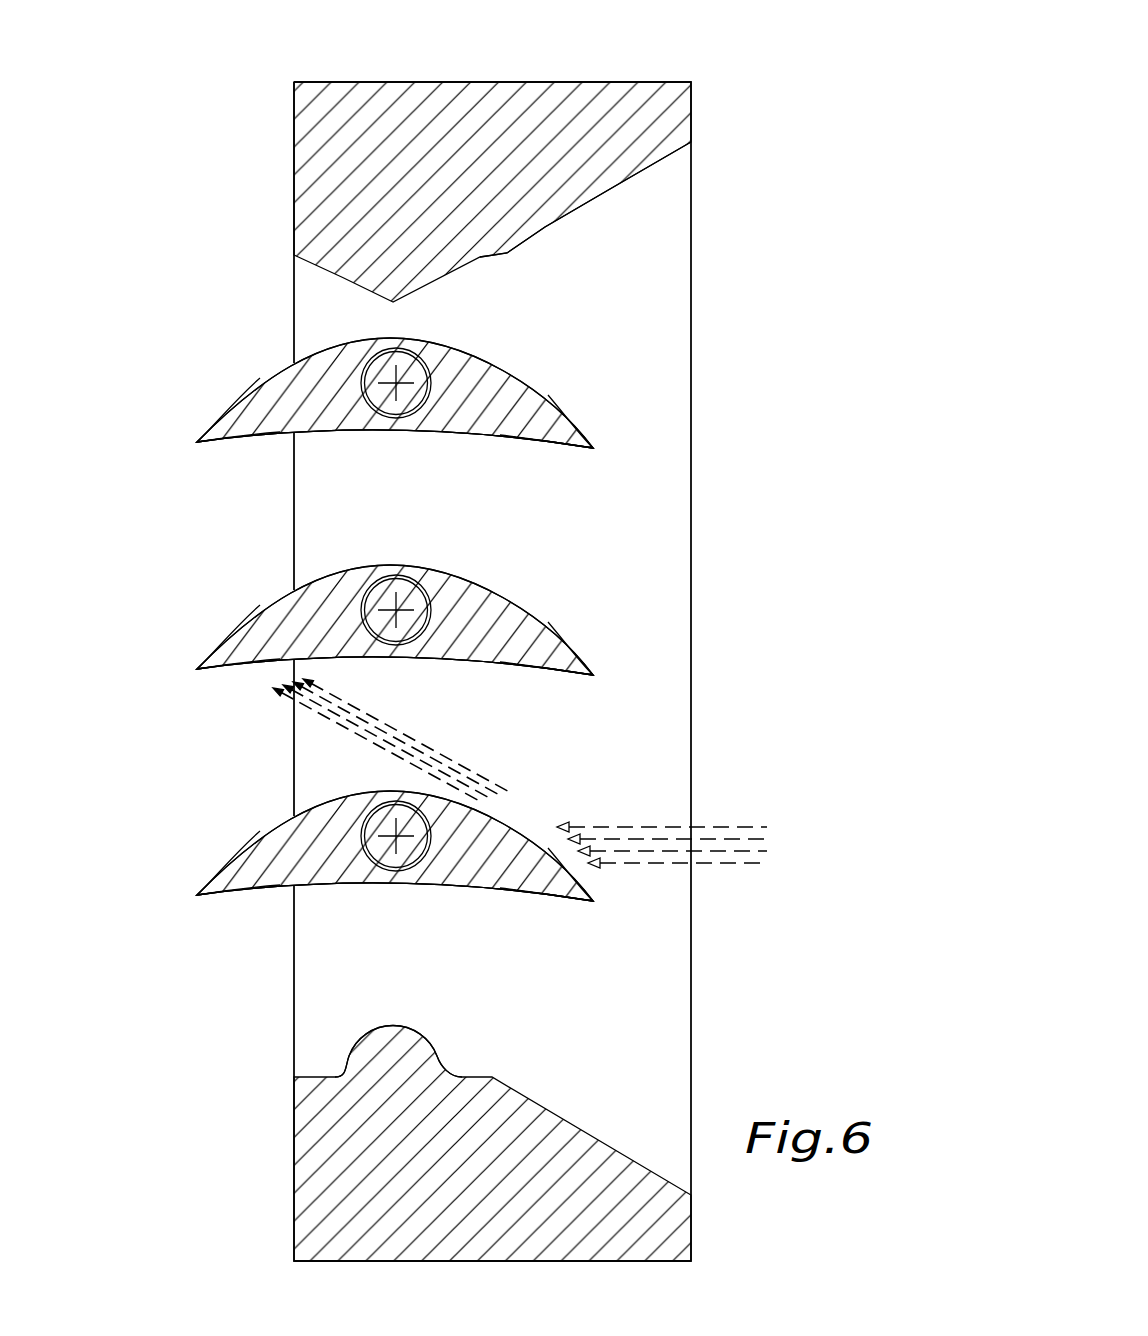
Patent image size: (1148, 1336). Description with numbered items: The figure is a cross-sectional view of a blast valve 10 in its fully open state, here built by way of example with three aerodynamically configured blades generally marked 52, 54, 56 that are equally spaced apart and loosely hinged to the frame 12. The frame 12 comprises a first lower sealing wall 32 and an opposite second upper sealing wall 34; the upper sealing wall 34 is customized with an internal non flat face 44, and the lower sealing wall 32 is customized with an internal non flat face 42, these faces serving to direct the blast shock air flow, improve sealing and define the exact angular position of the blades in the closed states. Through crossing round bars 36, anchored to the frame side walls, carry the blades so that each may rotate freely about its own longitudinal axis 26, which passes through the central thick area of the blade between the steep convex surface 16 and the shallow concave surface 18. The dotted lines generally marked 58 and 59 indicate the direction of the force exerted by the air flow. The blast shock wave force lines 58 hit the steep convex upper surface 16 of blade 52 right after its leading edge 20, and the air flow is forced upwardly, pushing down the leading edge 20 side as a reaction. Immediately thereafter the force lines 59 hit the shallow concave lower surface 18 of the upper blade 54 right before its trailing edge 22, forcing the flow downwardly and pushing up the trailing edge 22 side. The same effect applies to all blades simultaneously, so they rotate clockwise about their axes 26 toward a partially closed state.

The blast valve 10 is at (808, 50).
The frame 12 is at (490, 82).
The steep convex surface 16 is at (267, 380).
The shallow concave surface 18 is at (500, 440).
The leading edge 20 is at (593, 448).
The trailing edge 22 is at (197, 442).
The longitudinal axis 26 is at (393, 370).
The first lower sealing wall 32 is at (294, 1148).
The second upper sealing wall 34 is at (298, 182).
The round bars 36 is at (401, 352).
The non flat face 42 is at (440, 1055).
The non flat face 44 is at (480, 257).
The blade 52 is at (200, 840).
The blade 54 is at (533, 560).
The blade 56 is at (583, 388).
The blast shock wave force lines 58 is at (732, 797).
The air flow force lines 59 is at (487, 760).